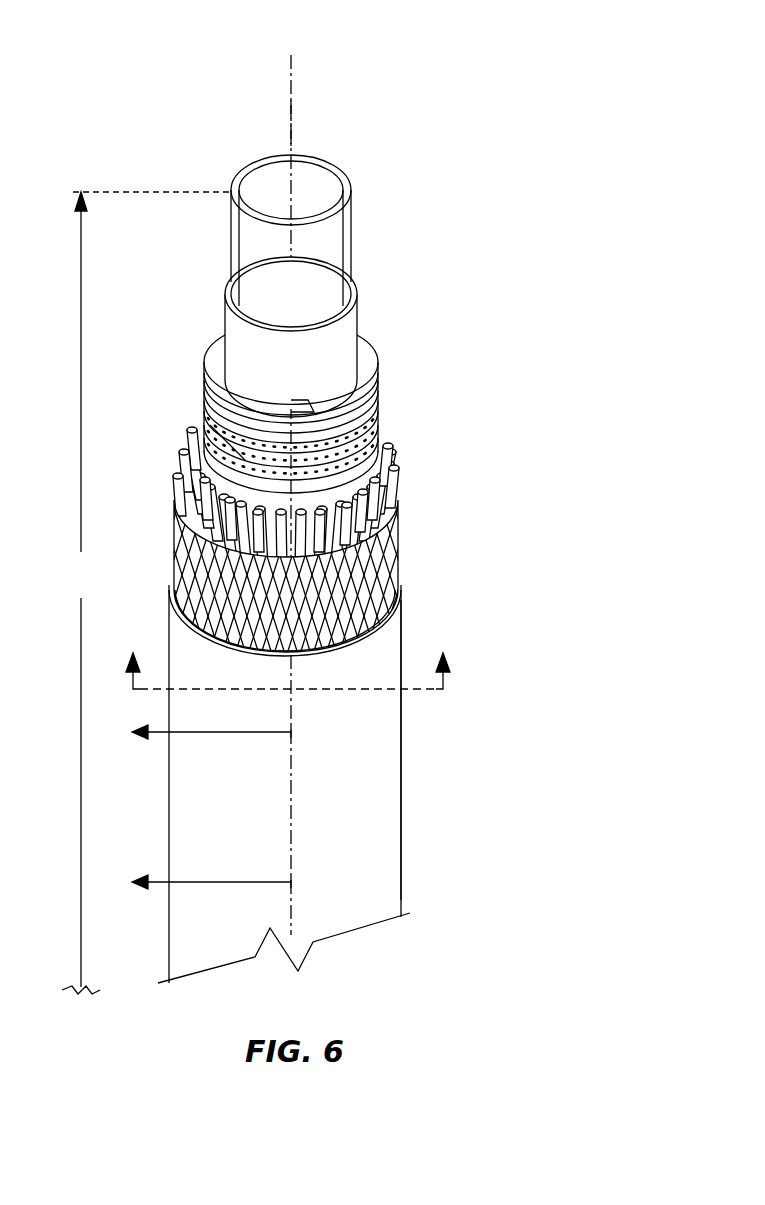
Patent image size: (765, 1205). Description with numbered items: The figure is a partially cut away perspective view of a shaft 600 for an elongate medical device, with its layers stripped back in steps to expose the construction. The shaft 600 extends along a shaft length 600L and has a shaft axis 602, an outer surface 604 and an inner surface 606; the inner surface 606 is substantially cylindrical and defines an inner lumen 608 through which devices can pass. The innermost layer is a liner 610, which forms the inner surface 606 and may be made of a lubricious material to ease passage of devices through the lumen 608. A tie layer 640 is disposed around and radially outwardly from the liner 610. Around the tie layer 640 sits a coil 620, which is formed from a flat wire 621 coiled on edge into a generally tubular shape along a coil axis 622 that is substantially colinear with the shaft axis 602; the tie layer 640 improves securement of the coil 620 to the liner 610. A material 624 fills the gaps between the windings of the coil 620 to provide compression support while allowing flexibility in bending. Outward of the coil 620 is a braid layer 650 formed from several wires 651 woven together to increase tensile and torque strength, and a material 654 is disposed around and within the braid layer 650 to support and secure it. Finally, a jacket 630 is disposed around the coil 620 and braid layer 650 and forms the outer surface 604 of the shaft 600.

The shaft 600 is at (234, 104).
The shaft length 600L is at (141, 593).
The shaft axis 602 is at (291, 70).
The outer surface 604 is at (402, 787).
The inner surface 606 is at (322, 185).
The inner lumen 608 is at (256, 193).
The liner 610 is at (352, 244).
The coil 620 is at (378, 395).
The flat wire 621 is at (362, 422).
The coil axis 622 is at (291, 122).
The material 624 is at (210, 425).
The jacket 630 is at (388, 828).
The tie layer 640 is at (358, 328).
The braid layer 650 is at (370, 503).
The wires 651 is at (372, 516).
The material 654 is at (172, 517).